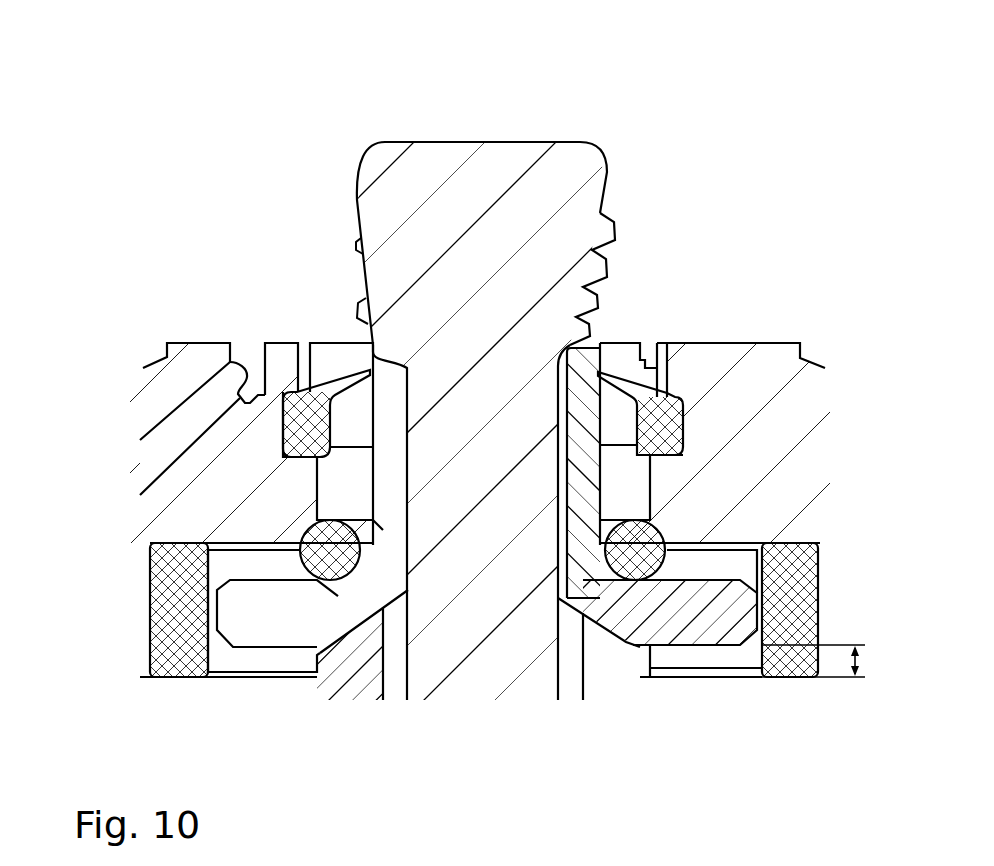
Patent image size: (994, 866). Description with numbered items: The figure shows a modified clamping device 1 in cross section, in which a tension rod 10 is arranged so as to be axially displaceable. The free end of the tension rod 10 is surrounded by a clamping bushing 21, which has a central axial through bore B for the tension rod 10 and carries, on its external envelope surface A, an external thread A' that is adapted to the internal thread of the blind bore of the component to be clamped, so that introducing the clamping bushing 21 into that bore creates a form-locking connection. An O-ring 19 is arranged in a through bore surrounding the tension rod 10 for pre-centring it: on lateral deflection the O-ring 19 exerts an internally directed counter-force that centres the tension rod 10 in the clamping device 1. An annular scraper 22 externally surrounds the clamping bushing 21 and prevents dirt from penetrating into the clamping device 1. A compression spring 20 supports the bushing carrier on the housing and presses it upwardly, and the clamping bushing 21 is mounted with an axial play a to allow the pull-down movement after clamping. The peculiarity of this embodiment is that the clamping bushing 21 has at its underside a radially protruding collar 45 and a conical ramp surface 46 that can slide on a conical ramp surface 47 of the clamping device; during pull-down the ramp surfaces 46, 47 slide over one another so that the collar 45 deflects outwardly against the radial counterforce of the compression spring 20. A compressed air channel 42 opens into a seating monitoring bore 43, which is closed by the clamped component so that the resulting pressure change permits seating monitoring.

The clamping device 1 is at (300, 112).
The tension rod 10 is at (475, 180).
The O-ring 19 is at (327, 543).
The compression spring 20 is at (780, 605).
The clamping bushing 21 is at (613, 268).
The scraper 22 is at (663, 425).
The compressed air channel 42 is at (190, 418).
The seating monitoring bore 43 is at (247, 357).
The radially protruding collar 45 is at (707, 608).
The conical ramp surface 46 is at (623, 643).
The conical ramp surface 47 is at (343, 637).
The external envelope surface A is at (317, 237).
The external thread A' is at (315, 289).
The axial through bore B is at (563, 388).
The axial play a is at (822, 663).